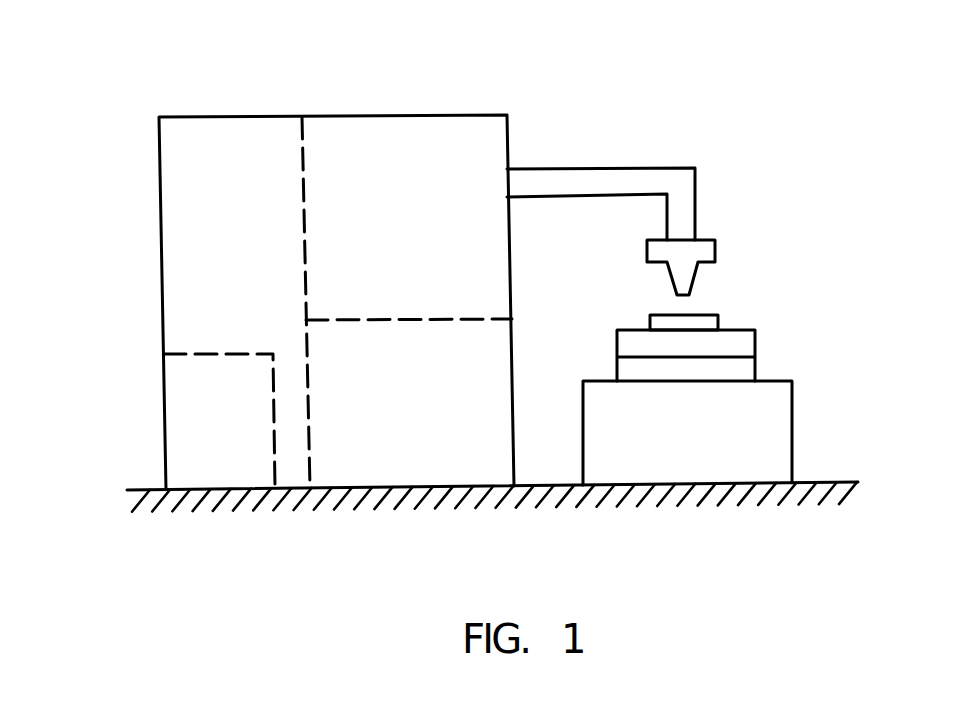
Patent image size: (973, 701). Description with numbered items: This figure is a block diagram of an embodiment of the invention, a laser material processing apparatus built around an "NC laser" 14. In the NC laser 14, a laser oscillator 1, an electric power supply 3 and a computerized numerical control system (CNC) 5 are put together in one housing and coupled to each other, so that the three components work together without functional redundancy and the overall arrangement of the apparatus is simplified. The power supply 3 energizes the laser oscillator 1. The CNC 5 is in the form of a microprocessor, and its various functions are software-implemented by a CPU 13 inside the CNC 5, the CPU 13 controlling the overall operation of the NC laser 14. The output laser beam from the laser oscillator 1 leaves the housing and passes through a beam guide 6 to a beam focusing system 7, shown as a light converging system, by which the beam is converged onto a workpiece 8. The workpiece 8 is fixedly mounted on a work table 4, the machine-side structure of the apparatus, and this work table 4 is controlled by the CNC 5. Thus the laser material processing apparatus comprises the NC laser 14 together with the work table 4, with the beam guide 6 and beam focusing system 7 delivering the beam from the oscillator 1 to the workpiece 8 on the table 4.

The laser oscillator 1 is at (413, 115).
The power supply 3 is at (512, 333).
The work table 4 is at (752, 412).
The computerized numerical control system (CNC) 5 is at (217, 130).
The beam guide 6 is at (544, 180).
The beam focusing system 7 is at (701, 250).
The workpiece 8 is at (698, 323).
The CPU 13 is at (208, 365).
The NC laser 14 is at (350, 106).